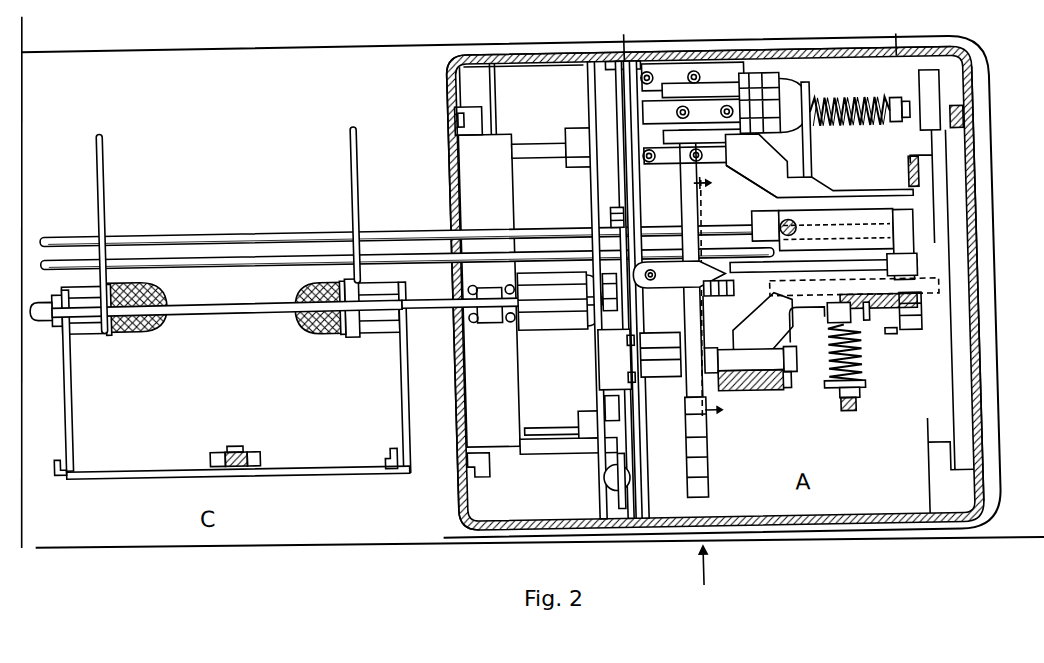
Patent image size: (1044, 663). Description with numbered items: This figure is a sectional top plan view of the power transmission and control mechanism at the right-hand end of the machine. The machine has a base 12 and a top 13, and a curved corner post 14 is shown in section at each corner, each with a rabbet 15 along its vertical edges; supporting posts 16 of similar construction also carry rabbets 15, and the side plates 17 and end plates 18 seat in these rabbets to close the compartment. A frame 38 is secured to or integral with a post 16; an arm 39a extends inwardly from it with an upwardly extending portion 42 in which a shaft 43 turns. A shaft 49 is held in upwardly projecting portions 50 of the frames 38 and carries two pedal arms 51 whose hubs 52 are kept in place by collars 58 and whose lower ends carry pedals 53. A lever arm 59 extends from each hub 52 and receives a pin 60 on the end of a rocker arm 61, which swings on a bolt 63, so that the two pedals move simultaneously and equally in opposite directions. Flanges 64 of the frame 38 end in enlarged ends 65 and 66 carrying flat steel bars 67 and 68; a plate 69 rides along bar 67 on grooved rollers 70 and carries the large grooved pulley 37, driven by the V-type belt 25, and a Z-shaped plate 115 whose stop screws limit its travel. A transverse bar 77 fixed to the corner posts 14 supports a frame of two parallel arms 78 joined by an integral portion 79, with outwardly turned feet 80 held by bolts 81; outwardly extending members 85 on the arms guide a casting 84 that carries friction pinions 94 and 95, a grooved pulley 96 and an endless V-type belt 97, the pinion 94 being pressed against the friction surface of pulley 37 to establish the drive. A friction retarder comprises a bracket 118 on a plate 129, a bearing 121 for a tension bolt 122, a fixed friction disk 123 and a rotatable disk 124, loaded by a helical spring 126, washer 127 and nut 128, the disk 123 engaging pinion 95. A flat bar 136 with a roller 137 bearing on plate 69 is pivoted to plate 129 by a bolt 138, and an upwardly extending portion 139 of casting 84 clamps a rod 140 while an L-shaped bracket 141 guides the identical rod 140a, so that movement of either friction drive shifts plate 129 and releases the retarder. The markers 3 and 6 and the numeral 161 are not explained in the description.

The section line 3 is at (707, 565).
The section line 6 is at (757, 37).
The base 12 is at (539, 534).
The top 13 is at (716, 296).
The corner post 14 is at (465, 96).
The rabbet 15 is at (980, 106).
The supporting post 16 is at (450, 64).
The side plate 17 is at (797, 44).
The end plate 18 is at (448, 186).
The V-type driving belt 25 is at (707, 479).
The grooved pulley 37 is at (700, 441).
The frame 38 is at (489, 290).
The arm 39a is at (558, 323).
The upwardly extending portion 42 is at (585, 321).
The shaft 43 is at (428, 311).
The shaft 49 is at (279, 309).
The upwardly projecting portion 50 is at (483, 322).
The pedal arm 51 is at (108, 165).
The hub 52 is at (80, 319).
The pedal 53 is at (143, 323).
The collar 58 is at (56, 317).
The lever arm 59 is at (69, 389).
The pin 60 is at (51, 463).
The rocker arm 61 is at (321, 465).
The bolt 63 is at (252, 444).
The flange 64 is at (554, 165).
The enlarged end 65 is at (593, 284).
The enlarged end 66 is at (583, 176).
The flat steel bar 67 is at (622, 100).
The steel bar 68 is at (594, 202).
The plate 69 is at (643, 420).
The grooved roller 70 is at (612, 219).
The transverse bar 77 is at (950, 384).
The parallel arm 78 is at (878, 197).
The connecting portion 79 is at (873, 244).
The foot 80 is at (931, 160).
The bolt 81 is at (912, 172).
The casting 84 is at (770, 305).
The outwardly extending member 85 is at (821, 241).
The friction pinion 94 is at (790, 378).
The friction pinion 95 is at (719, 314).
The grooved pulley 96 is at (750, 397).
The endless V-type belt 97 is at (785, 394).
The Z-shaped plate 115 is at (617, 359).
The bracket 118 is at (890, 342).
The bearing 121 is at (839, 312).
The tension bolt 122 is at (848, 416).
The friction disk 123 is at (866, 326).
The friction disk 124 is at (792, 334).
The helical spring 126 is at (862, 378).
The washer 127 is at (826, 394).
The nut 128 is at (858, 400).
The plate 129 is at (920, 270).
The flat bar 136 is at (679, 275).
The roller 137 is at (653, 290).
The bolt 138 is at (912, 288).
The upwardly extending portion 139 is at (823, 230).
The rod 140 is at (417, 225).
The rod 140a is at (289, 260).
The L-shaped bracket 141 is at (843, 288).
The screw 161 is at (903, 226).